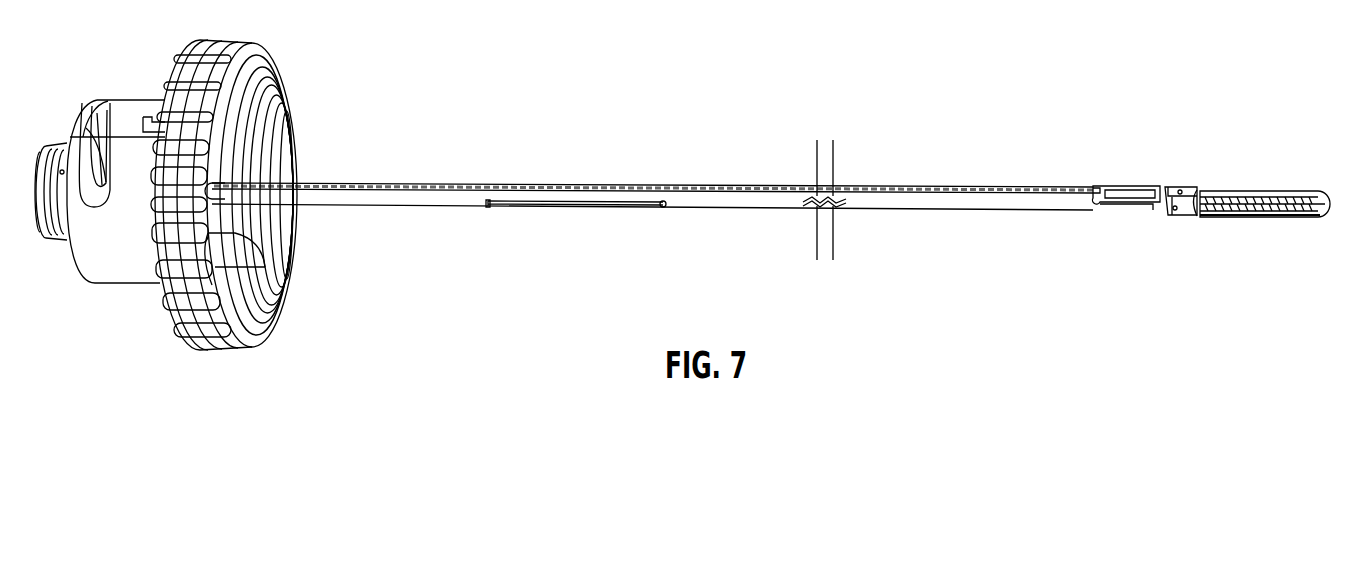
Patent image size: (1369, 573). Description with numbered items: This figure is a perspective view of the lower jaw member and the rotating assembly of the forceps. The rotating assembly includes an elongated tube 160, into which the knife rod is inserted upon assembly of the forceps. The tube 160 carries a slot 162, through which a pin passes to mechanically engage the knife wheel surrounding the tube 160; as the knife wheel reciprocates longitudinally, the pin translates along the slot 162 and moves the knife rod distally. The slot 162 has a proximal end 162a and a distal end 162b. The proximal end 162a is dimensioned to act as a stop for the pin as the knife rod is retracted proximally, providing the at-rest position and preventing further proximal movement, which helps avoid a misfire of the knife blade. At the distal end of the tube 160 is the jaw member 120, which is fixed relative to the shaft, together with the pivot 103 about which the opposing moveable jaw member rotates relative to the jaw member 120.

The tube 160 is at (970, 208).
The slot 162 is at (557, 206).
The proximal end of slot 162a is at (490, 207).
The distal end of slot 162b is at (667, 208).
The pivot 103 is at (1175, 212).
The jaw member 120 is at (1243, 218).